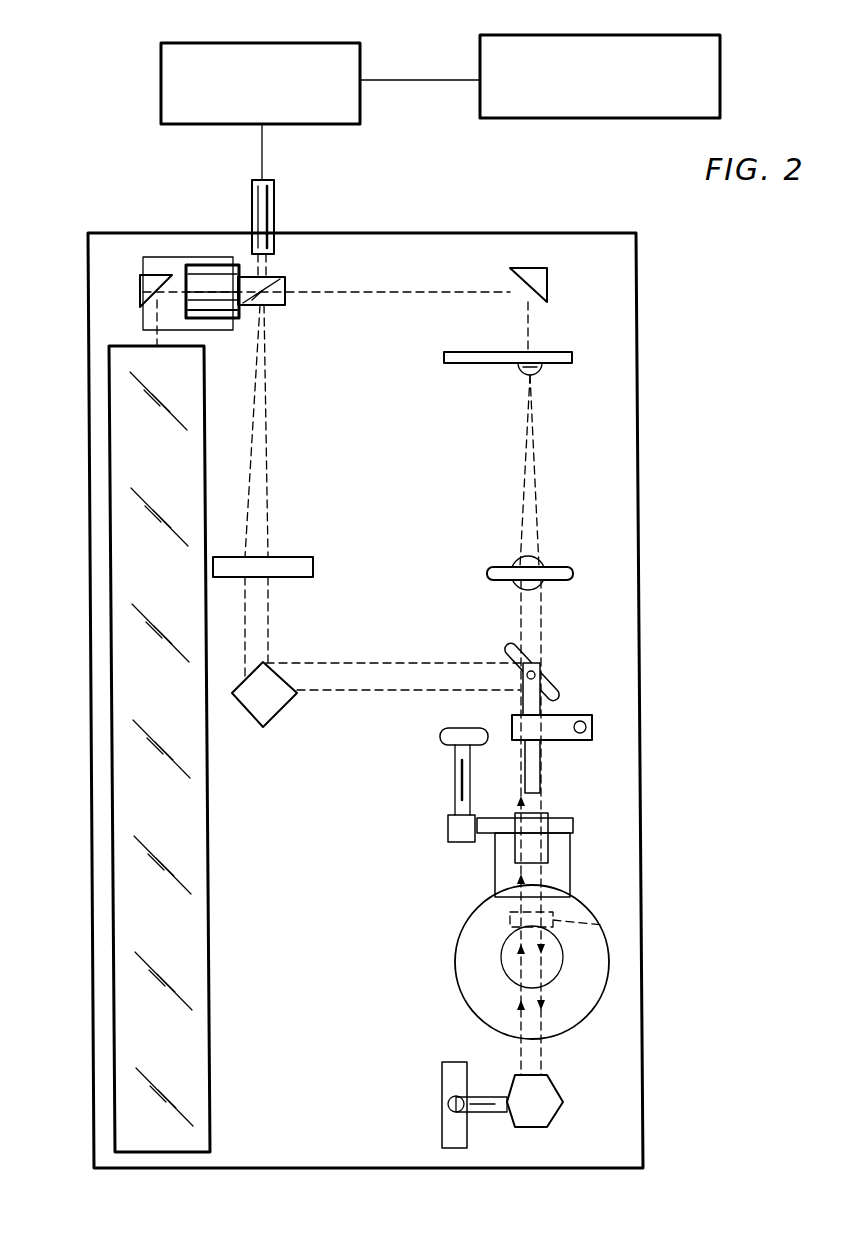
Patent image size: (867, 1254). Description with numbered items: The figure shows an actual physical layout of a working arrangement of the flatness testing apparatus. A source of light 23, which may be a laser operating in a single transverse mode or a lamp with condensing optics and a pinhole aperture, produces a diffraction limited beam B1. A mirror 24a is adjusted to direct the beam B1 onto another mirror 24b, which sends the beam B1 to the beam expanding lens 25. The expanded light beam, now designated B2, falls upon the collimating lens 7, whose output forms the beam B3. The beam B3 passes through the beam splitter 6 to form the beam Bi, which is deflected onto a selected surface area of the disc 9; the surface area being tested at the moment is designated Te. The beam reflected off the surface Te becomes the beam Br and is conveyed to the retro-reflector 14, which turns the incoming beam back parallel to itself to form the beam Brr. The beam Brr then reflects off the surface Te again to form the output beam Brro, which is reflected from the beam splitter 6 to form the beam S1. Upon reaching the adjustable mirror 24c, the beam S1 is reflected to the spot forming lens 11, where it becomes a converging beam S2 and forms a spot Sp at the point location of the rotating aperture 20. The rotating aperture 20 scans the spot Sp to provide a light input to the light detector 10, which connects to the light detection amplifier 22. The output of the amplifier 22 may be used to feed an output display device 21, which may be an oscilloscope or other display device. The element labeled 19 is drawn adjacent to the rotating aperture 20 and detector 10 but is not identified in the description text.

The light detection amplifier 22 is at (342, 43).
The output display device 21 is at (658, 35).
The light detector 10 is at (275, 204).
The light source 19 is at (205, 265).
The rotating aperture 20 is at (283, 305).
The mirror 24a is at (140, 287).
The mirror 24b is at (547, 280).
The adjustable mirror 24c is at (278, 703).
The beam expanding lens 25 is at (560, 366).
The spot forming lens 11 is at (299, 562).
The collimating lens 7 is at (560, 574).
The beam splitter 6 is at (583, 741).
The disc 9 is at (595, 962).
The retro-reflector 14 is at (551, 1105).
The source of light 23 is at (192, 833).
The diffraction limited beam B1 is at (126, 336).
The expanded light beam B2 is at (538, 502).
The collimated beam B3 is at (543, 606).
The incident beam Bi is at (542, 877).
The tested surface area Te is at (592, 916).
The output beam Brro is at (513, 872).
The retro-reflected beam Brr is at (523, 967).
The reflected beam Br is at (545, 1017).
The spot Sp is at (282, 284).
The beam splitter output beam S1 is at (262, 639).
The converging beam S2 is at (267, 502).